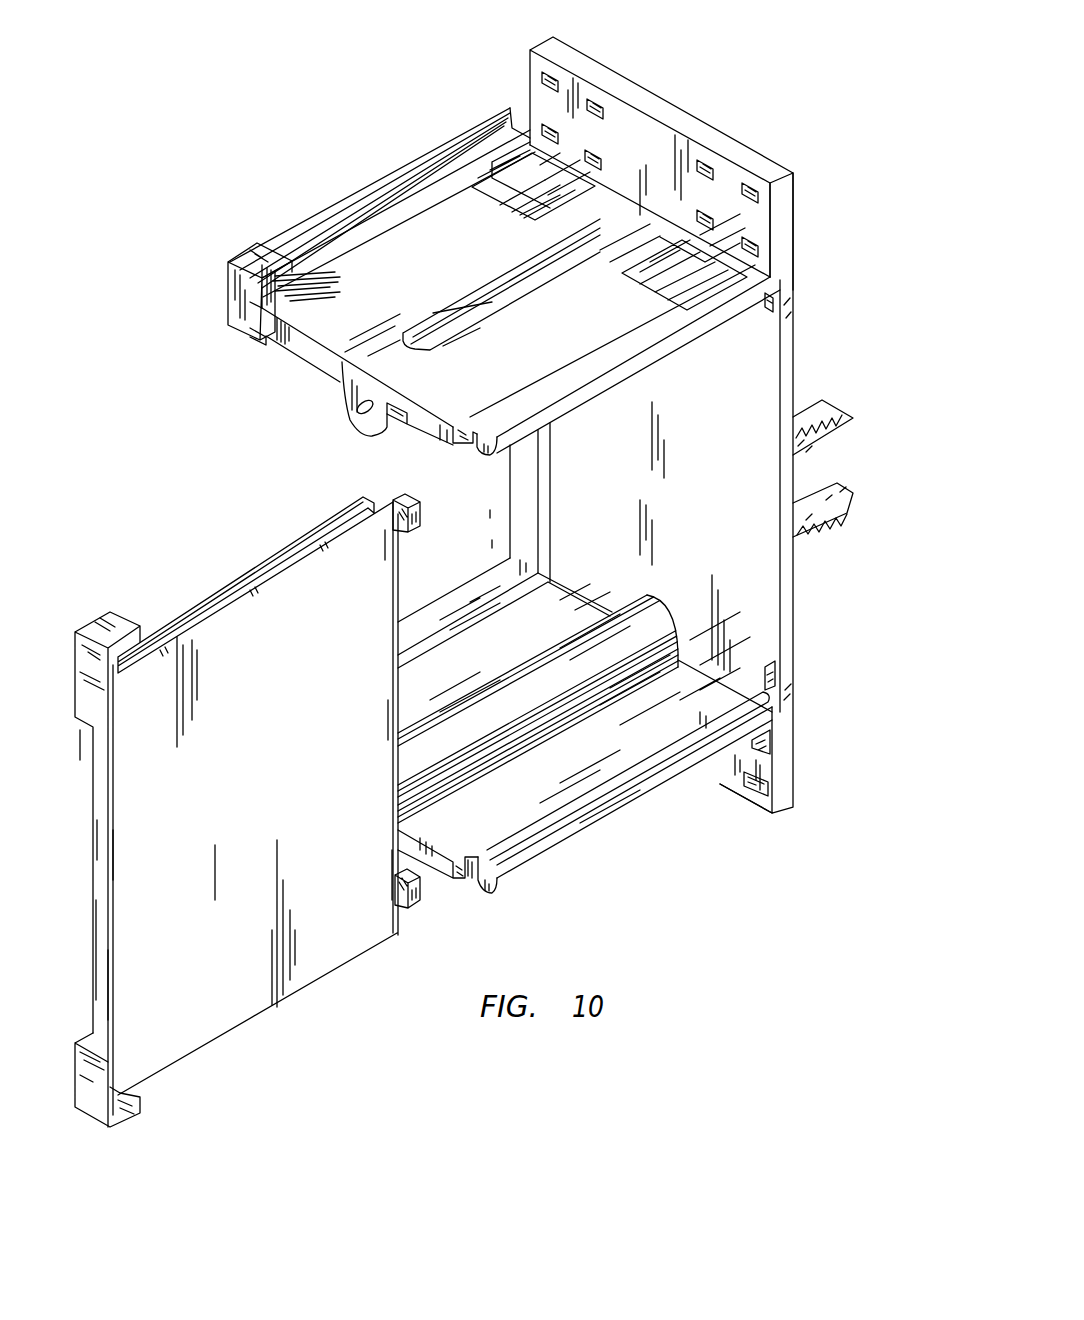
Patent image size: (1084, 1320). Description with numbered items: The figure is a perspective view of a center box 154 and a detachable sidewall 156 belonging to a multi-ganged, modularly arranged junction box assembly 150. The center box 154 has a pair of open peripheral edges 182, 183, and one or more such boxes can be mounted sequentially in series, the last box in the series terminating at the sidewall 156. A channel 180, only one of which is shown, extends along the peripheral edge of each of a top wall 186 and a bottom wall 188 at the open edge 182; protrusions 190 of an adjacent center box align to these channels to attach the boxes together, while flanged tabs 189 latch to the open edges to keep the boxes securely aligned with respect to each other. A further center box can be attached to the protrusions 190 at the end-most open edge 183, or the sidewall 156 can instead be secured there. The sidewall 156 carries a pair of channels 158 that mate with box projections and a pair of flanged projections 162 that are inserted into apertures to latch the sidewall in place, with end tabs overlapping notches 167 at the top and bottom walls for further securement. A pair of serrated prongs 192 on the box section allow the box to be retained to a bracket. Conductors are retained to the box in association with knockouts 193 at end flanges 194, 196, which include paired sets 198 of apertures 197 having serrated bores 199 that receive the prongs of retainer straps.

The junction box assembly 150 is at (866, 242).
The center box 154 is at (794, 633).
The sidewall 156 is at (300, 963).
The channels 158 is at (296, 538).
The flanged projections 162 is at (410, 520).
The notches 167 is at (462, 426).
The channel 180 is at (370, 215).
The open peripheral edge 182 is at (477, 578).
The open peripheral edge 183 is at (781, 368).
The top wall 186 is at (447, 190).
The bottom wall 188 is at (612, 818).
The flanged tabs 189 is at (258, 250).
The protrusions 190 is at (480, 452).
The serrated prongs 192 is at (838, 486).
The knockouts 193 is at (700, 298).
The end flange 194 is at (786, 190).
The end flange 196 is at (788, 738).
The apertures 197 is at (590, 108).
The paired sets 198 is at (594, 104).
The serrated bores 199 is at (704, 165).